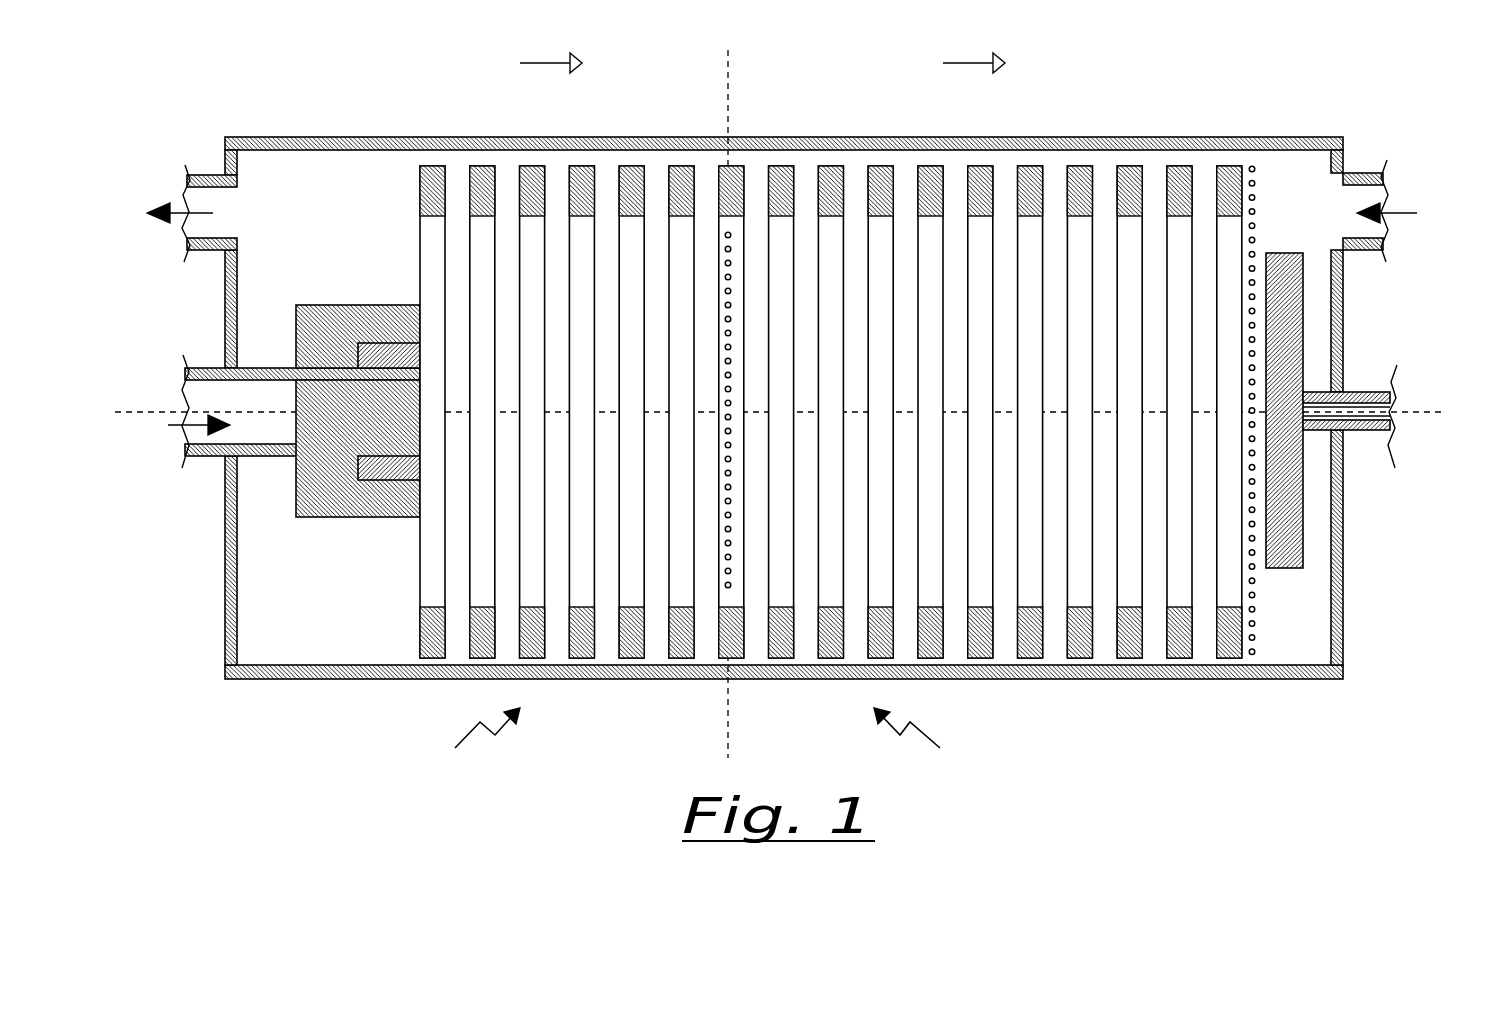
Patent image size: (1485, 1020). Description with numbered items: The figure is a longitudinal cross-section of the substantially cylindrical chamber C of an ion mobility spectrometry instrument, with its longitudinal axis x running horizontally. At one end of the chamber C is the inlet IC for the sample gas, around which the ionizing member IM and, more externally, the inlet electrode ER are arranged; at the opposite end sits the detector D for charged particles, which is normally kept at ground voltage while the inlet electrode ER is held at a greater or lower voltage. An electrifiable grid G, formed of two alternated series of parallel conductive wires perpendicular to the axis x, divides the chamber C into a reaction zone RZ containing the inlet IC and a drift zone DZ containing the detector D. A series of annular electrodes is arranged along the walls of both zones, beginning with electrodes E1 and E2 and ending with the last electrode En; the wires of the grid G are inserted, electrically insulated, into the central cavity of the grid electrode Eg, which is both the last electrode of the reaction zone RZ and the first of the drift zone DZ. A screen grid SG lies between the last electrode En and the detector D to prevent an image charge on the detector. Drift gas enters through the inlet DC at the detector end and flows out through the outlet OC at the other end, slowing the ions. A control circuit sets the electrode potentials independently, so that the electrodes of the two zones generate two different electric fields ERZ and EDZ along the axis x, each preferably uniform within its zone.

The chamber C is at (858, 167).
The longitudinal axis x is at (790, 395).
The outlet OC is at (211, 200).
The inlet IC is at (212, 390).
The inlet electrode ER is at (312, 312).
The ionizing member IM is at (372, 475).
The first electrode E1 is at (431, 176).
The second electrode E2 is at (481, 176).
The grid electrode Eg is at (727, 176).
The last electrode En is at (1228, 176).
The electrifiable grid G is at (732, 233).
The screen grid SG is at (1255, 168).
The detector D is at (1297, 332).
The drift gas inlet DC is at (1358, 200).
The electric field in the reaction zone ERZ is at (545, 83).
The electric field in the drift zone EDZ is at (970, 83).
The reaction zone RZ is at (466, 737).
The drift zone DZ is at (927, 737).